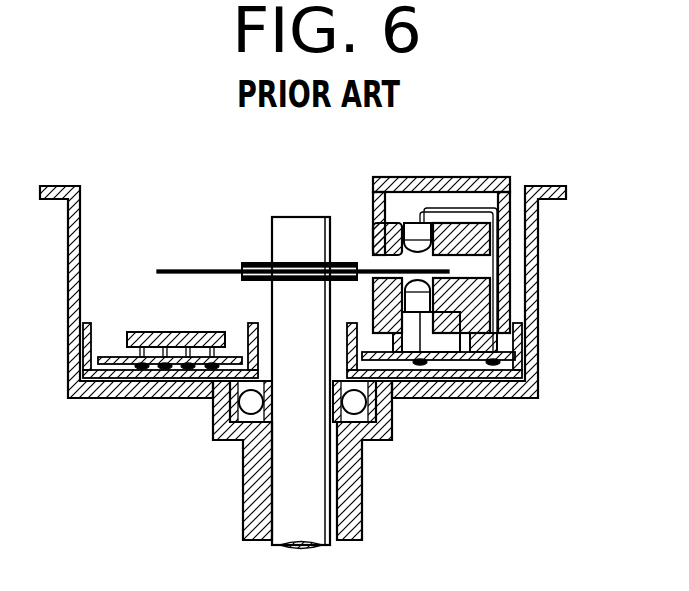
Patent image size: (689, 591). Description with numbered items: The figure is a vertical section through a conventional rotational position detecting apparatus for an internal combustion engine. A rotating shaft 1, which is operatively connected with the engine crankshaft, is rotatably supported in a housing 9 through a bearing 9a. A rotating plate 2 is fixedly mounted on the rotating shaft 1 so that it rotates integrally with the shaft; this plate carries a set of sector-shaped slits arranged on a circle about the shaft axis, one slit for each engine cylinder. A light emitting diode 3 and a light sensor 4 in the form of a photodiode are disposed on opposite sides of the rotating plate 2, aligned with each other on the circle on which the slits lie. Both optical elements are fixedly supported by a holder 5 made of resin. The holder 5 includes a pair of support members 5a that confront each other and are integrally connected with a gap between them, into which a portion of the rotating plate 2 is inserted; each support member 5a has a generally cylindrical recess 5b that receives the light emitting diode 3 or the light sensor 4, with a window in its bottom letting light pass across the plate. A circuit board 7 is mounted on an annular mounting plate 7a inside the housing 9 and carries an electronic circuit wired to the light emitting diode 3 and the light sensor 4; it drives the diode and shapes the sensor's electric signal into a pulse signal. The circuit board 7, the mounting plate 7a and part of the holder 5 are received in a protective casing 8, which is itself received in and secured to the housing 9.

The rotating shaft 1 is at (299, 212).
The rotating plate 2 is at (203, 266).
The light emitting diode 3 is at (380, 237).
The light sensor 4 is at (407, 298).
The holder 5 is at (468, 225).
The support member 5a is at (441, 152).
The recess 5b is at (458, 275).
The circuit board 7 is at (127, 334).
The mounting plate 7a is at (512, 363).
The protective casing 8 is at (125, 392).
The housing 9 is at (383, 422).
The bearing 9a is at (213, 426).